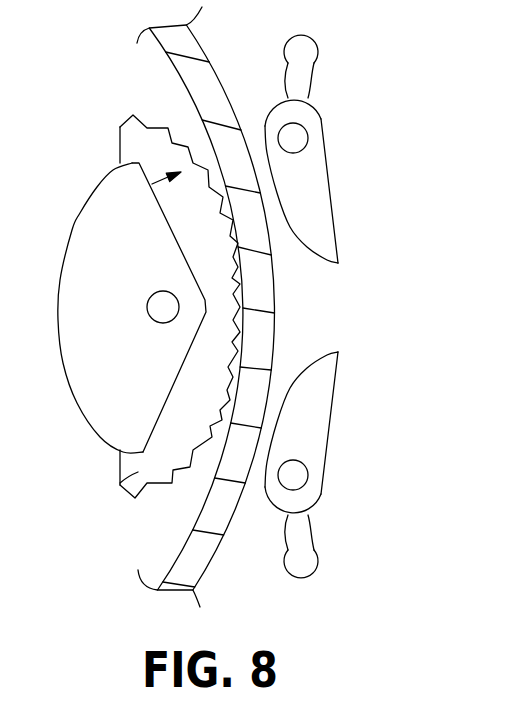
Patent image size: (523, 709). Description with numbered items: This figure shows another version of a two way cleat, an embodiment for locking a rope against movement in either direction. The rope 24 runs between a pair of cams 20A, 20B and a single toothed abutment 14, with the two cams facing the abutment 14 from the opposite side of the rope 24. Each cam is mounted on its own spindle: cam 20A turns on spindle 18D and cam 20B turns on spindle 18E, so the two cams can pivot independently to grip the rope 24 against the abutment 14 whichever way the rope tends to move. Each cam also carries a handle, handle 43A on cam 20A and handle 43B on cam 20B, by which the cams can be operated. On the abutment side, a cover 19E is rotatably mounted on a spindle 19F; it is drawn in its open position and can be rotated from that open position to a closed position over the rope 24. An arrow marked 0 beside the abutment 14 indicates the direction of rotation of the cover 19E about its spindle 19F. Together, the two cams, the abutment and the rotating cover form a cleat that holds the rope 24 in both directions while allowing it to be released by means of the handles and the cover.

The abutment 14 is at (118, 486).
The cover 19E is at (103, 393).
The spindle 19F is at (147, 307).
The rope 24 is at (260, 331).
The cam 20A is at (318, 222).
The cam 20B is at (317, 392).
The spindle 18D is at (293, 138).
The spindle 18E is at (293, 475).
The handle 43A is at (303, 63).
The handle 43B is at (303, 548).
The direction arrow 0 is at (172, 184).